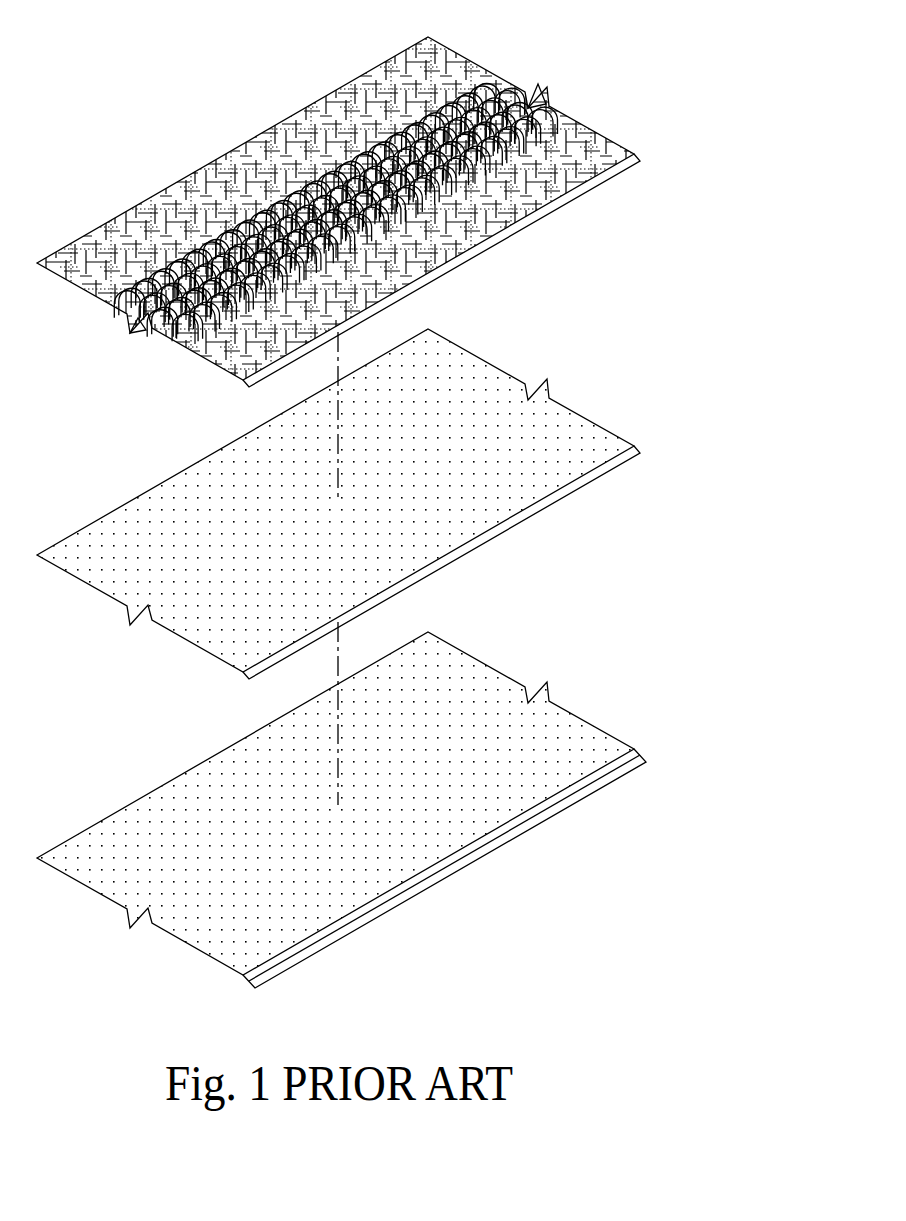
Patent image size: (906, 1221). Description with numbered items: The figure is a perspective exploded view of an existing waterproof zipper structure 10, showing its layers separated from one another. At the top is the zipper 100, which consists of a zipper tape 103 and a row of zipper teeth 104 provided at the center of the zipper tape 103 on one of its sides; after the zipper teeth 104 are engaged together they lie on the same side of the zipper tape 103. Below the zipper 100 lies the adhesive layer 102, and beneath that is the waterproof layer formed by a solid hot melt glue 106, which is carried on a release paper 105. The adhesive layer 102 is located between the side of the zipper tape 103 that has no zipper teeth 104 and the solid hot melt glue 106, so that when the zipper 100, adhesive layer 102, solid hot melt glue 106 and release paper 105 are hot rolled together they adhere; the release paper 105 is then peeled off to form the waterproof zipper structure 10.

The waterproof zipper structure 10 is at (168, 112).
The zipper 100 is at (726, 90).
The adhesive layer 102 is at (497, 503).
The zipper tape 103 is at (603, 150).
The zipper teeth 104 is at (508, 121).
The release paper 105 is at (468, 855).
The solid hot melt glue 106 is at (498, 818).